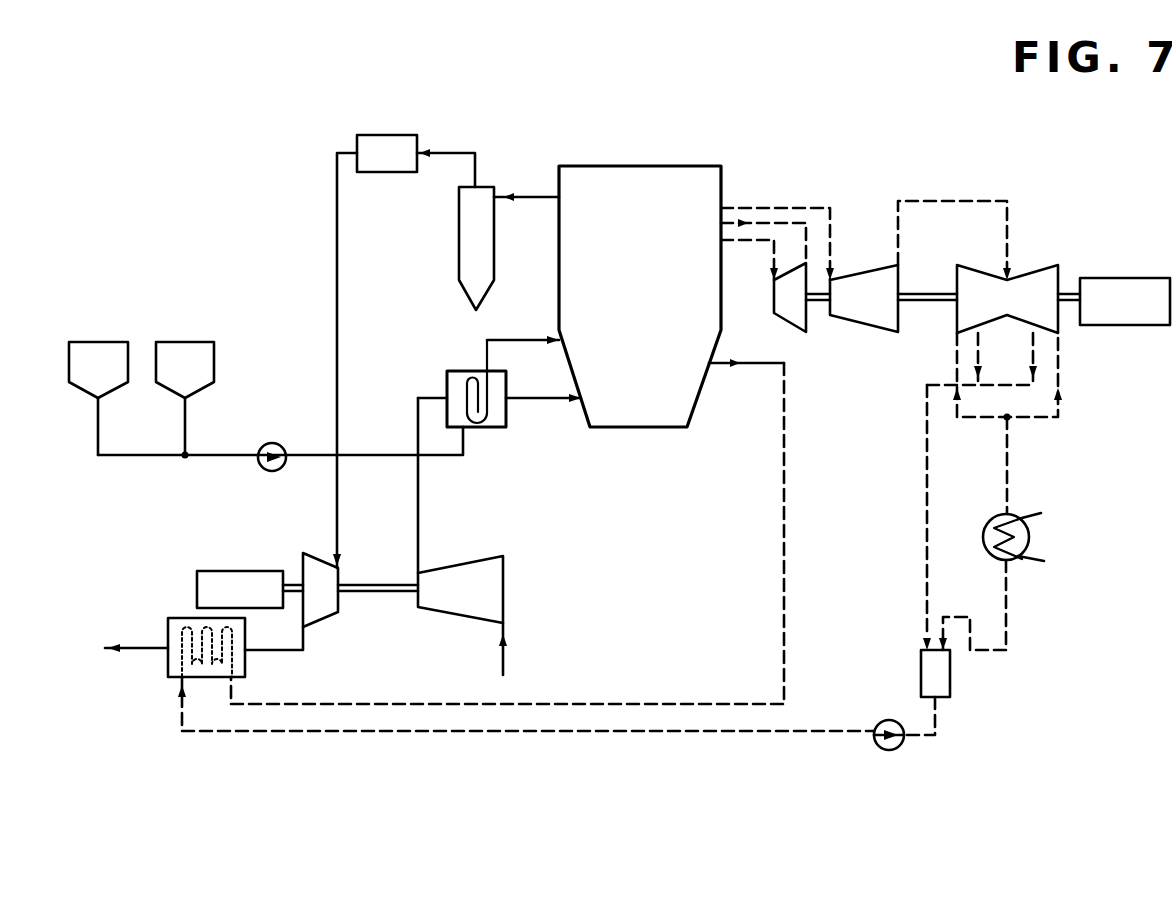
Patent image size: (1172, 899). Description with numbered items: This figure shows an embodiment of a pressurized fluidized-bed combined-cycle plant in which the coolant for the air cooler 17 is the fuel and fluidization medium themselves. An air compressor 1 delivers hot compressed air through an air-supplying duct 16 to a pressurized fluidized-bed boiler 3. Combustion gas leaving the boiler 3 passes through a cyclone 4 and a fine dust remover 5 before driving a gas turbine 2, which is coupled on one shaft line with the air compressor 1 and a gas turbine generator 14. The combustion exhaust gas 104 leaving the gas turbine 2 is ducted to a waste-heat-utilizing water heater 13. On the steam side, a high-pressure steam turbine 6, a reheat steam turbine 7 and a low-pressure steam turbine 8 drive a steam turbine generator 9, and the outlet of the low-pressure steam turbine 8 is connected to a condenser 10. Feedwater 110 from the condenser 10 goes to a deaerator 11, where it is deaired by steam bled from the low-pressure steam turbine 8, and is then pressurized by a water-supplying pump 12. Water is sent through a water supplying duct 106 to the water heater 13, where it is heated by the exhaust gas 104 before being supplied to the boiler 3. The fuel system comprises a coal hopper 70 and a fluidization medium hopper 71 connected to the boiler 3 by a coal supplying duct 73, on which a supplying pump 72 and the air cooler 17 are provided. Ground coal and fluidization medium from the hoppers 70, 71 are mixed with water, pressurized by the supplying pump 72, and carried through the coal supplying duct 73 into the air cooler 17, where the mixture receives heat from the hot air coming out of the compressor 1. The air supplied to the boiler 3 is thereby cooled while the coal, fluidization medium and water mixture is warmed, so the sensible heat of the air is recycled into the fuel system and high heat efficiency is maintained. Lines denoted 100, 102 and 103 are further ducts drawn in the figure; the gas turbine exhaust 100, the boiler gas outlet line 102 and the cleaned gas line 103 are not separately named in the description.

The air compressor 1 is at (455, 617).
The gas turbine 2 is at (316, 553).
The pressurized fluidized-bed boiler 3 is at (703, 185).
The cyclone 4 is at (459, 225).
The fine dust remover 5 is at (388, 133).
The high-pressure steam turbine 6 is at (787, 322).
The reheat steam turbine 7 is at (868, 268).
The low-pressure steam turbine 8 is at (1040, 265).
The steam turbine generator 9 is at (1122, 278).
The condenser 10 is at (1030, 537).
The deaerator 11 is at (950, 683).
The water-supplying pump 12 is at (889, 752).
The waste-heat-utilizing water heater 13 is at (180, 618).
The gas turbine generator 14 is at (238, 571).
The air-supplying duct 16 is at (418, 512).
The air cooler 17 is at (447, 385).
The coal hopper 70 is at (98, 340).
The fluidization medium hopper 71 is at (185, 340).
The supplying pump 72 is at (272, 442).
The coal supplying duct 73 is at (447, 457).
The exhaust line 100 is at (505, 665).
The flue gas line 102 is at (535, 195).
The gas line 103 is at (337, 262).
The combustion exhaust gas 104 is at (305, 640).
The water supplying duct 106 is at (683, 733).
The feedwater 110 is at (1006, 603).